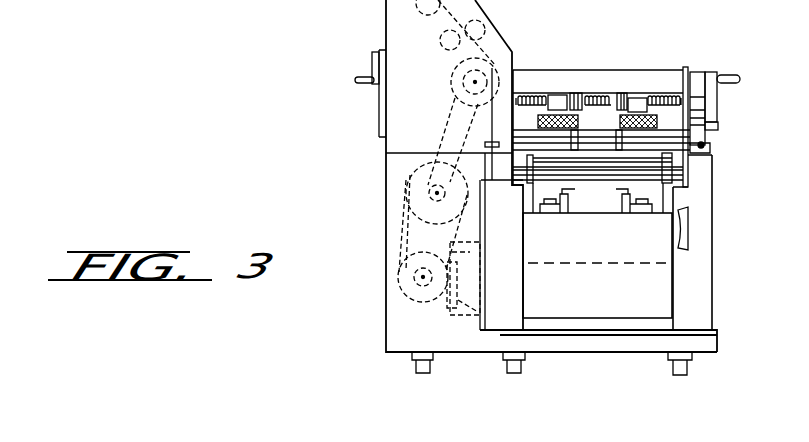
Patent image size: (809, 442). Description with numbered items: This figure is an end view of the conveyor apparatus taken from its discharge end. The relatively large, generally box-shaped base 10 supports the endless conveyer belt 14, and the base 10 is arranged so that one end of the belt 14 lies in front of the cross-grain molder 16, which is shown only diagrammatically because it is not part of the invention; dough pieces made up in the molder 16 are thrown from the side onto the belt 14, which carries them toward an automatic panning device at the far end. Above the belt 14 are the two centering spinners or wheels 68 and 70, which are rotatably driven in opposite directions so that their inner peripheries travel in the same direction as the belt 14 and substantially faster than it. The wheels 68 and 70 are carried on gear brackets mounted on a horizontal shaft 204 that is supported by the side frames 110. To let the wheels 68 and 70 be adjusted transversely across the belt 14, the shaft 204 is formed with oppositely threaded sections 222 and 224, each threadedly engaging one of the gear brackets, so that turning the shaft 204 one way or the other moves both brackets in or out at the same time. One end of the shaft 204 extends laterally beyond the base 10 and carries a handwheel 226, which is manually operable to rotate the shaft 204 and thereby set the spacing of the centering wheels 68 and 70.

The base 10 is at (673, 262).
The endless conveyer belt 14 is at (673, 137).
The cross-grain molder 16 is at (490, 16).
The centering spinner 68 is at (599, 121).
The centering spinner 70 is at (657, 122).
The side frame 110 is at (698, 73).
The horizontal shaft 204 is at (595, 100).
The threaded section 222 is at (530, 98).
The threaded section 224 is at (653, 100).
The handwheel 226 is at (705, 97).